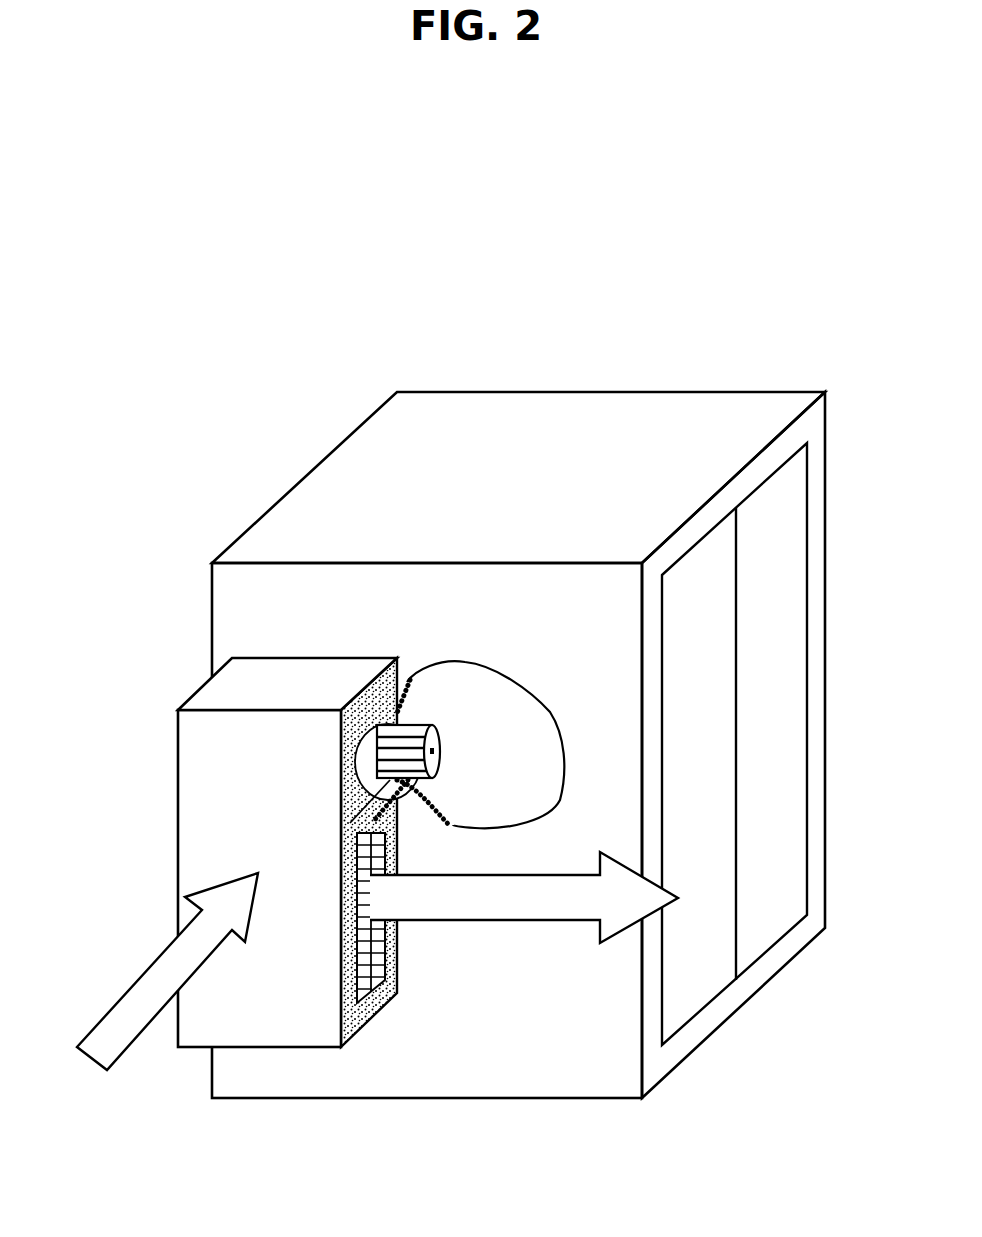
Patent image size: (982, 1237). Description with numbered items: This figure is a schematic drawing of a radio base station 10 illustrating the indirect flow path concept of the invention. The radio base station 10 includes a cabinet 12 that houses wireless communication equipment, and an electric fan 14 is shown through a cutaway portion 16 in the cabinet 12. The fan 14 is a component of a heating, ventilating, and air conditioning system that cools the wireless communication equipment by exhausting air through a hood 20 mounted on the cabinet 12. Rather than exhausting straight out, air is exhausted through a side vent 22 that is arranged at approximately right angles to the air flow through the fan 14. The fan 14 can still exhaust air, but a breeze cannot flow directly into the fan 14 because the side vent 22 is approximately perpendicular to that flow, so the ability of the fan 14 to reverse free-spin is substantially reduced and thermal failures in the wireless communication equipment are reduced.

The radio base station 10 is at (210, 352).
The cabinet 12 is at (730, 408).
The electric fan 14 is at (447, 750).
The cutaway portion 16 is at (563, 757).
The hood 20 is at (232, 690).
The side vent 22 is at (402, 960).